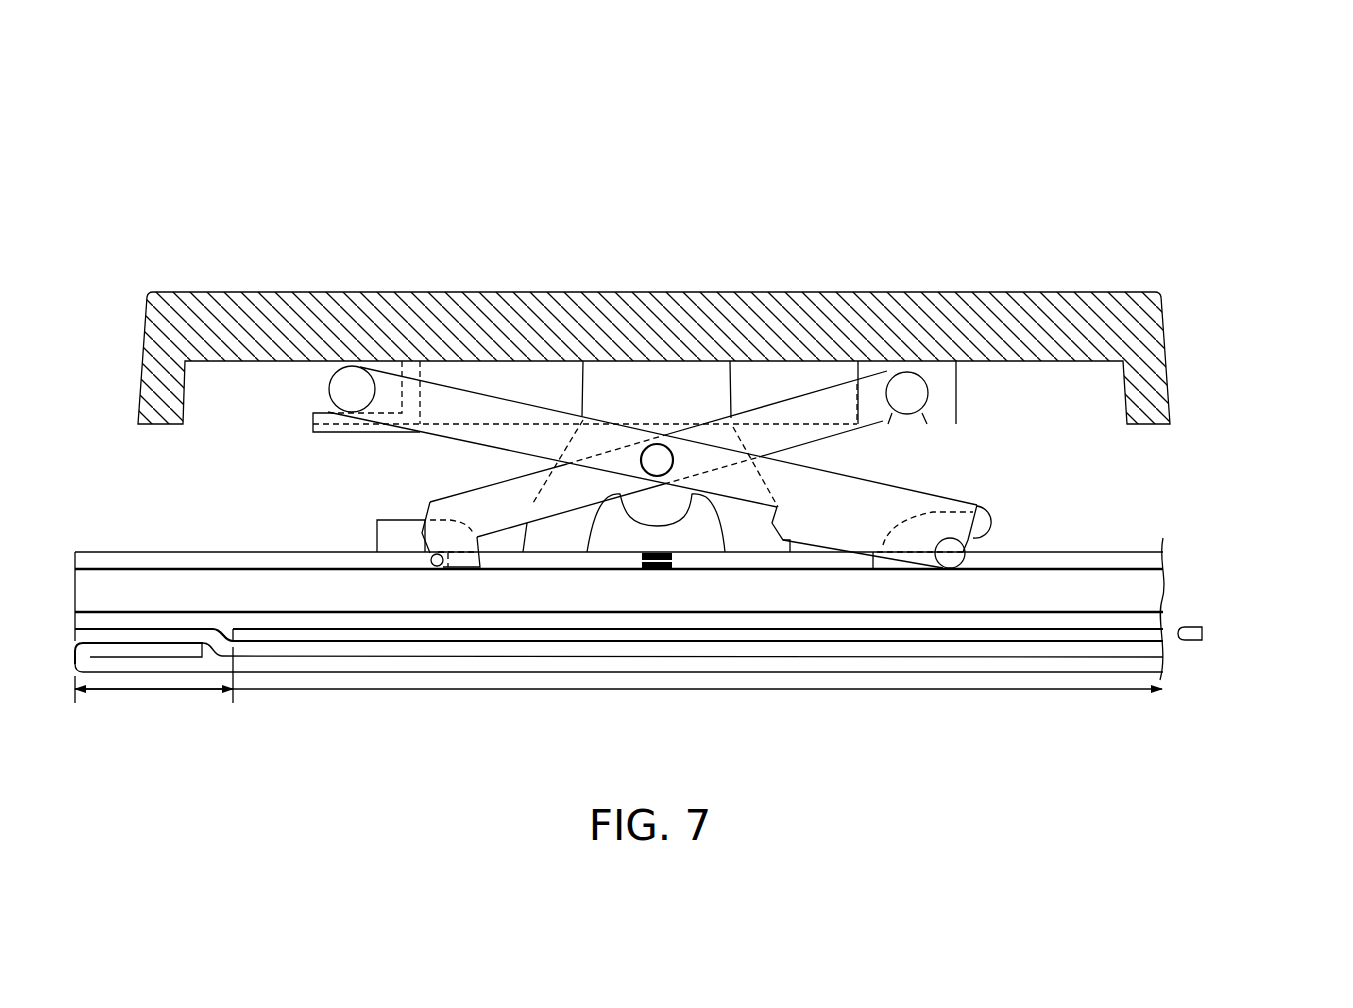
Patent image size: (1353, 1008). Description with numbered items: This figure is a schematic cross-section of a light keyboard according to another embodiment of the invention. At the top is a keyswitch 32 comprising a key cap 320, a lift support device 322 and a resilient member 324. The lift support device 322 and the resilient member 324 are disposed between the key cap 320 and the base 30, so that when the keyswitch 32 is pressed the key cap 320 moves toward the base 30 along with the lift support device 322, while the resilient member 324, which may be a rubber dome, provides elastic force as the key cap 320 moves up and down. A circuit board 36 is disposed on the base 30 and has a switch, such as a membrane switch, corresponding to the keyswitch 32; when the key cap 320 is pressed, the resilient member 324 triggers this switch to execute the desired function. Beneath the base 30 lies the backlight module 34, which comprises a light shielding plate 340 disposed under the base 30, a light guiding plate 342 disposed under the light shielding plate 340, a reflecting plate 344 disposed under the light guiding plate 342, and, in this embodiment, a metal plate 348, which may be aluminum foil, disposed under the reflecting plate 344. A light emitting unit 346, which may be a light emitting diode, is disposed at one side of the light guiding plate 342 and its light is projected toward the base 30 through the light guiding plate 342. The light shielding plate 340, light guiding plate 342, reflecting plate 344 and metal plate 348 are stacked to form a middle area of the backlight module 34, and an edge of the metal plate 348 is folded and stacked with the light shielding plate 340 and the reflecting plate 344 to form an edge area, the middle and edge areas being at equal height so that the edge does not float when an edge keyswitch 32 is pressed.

The keyswitch 32 is at (925, 220).
The key cap 320 is at (794, 314).
The resilient member 324 is at (646, 373).
The lift support device 322 is at (461, 465).
The circuit board 36 is at (1058, 557).
The base 30 is at (1118, 578).
The backlight module 34 is at (1263, 533).
The light shielding plate 340 is at (1170, 600).
The light guiding plate 342 is at (1152, 622).
The light emitting unit 346 is at (1203, 632).
The reflecting plate 344 is at (1157, 648).
The metal plate 348 is at (1158, 663).